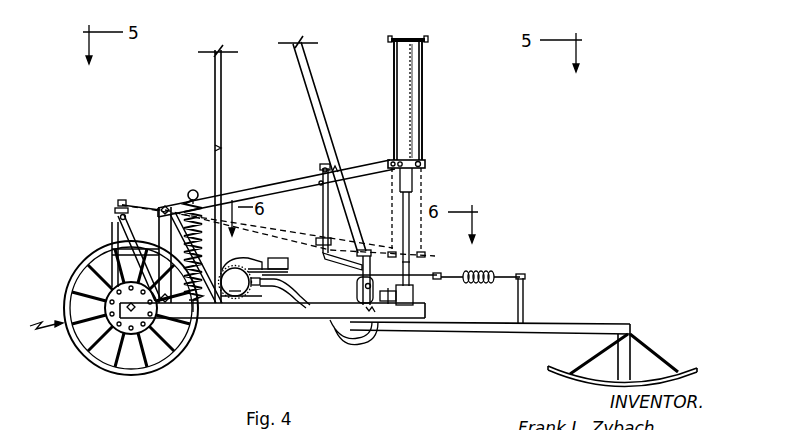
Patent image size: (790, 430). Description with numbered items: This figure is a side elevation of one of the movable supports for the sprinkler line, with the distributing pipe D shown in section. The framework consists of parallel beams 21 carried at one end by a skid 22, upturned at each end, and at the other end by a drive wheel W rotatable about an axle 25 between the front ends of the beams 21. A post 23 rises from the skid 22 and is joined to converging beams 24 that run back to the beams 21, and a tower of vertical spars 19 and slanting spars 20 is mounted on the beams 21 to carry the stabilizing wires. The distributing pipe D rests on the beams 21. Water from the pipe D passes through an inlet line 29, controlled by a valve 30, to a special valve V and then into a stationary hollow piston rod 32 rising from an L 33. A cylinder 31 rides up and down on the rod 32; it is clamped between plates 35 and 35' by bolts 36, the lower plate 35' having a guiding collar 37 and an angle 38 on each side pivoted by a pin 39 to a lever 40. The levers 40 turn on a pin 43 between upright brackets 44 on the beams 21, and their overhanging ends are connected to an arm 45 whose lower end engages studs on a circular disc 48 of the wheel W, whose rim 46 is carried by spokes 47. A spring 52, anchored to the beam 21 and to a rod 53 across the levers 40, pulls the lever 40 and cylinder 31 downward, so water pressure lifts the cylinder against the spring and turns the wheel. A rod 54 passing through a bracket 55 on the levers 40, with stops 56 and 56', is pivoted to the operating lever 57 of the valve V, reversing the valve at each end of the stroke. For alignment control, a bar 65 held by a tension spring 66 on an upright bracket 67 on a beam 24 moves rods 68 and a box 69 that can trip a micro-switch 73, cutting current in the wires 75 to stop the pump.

The vertical spar 19 is at (215, 88).
The slanting spar 20 is at (315, 93).
The beams or angles 21 is at (263, 319).
The skid 22 is at (690, 373).
The post 23 is at (624, 370).
The converging beams or angles 24 is at (527, 334).
The axle 25 is at (127, 308).
The inlet line 29 is at (364, 334).
The valve 30 is at (248, 301).
The cylinder 31 is at (422, 110).
The hollow piston rod or pipe 32 is at (409, 270).
The L 33 is at (413, 297).
The plate 35 is at (417, 24).
The lower plate 35' is at (425, 153).
The bolts 36 is at (393, 62).
The guiding collar 37 is at (412, 188).
The angle 38 is at (424, 171).
The pin or bolt 39 is at (391, 163).
The lever 40 is at (280, 190).
The pin 43 is at (166, 206).
The upright bracket 44 is at (161, 209).
The arm 45 is at (132, 236).
The rim 46 is at (186, 357).
The spokes 47 is at (90, 272).
The circular disc 48 is at (128, 332).
The spring 52 is at (205, 254).
The rod 53 is at (193, 190).
The rod 54 is at (323, 205).
The bracket 55 is at (320, 180).
The stop 56 is at (310, 148).
The stop 56' is at (348, 223).
The operating lever 57 is at (347, 265).
The bar 65 is at (452, 276).
The tension spring 66 is at (494, 274).
The upright bracket 67 is at (526, 284).
The rods 68 is at (305, 273).
The box 69 is at (282, 284).
The micro-switch 73 is at (287, 252).
The wires 75 is at (256, 260).
The distributing pipe D is at (235, 282).
The valve V is at (352, 296).
The drive wheel W is at (38, 327).